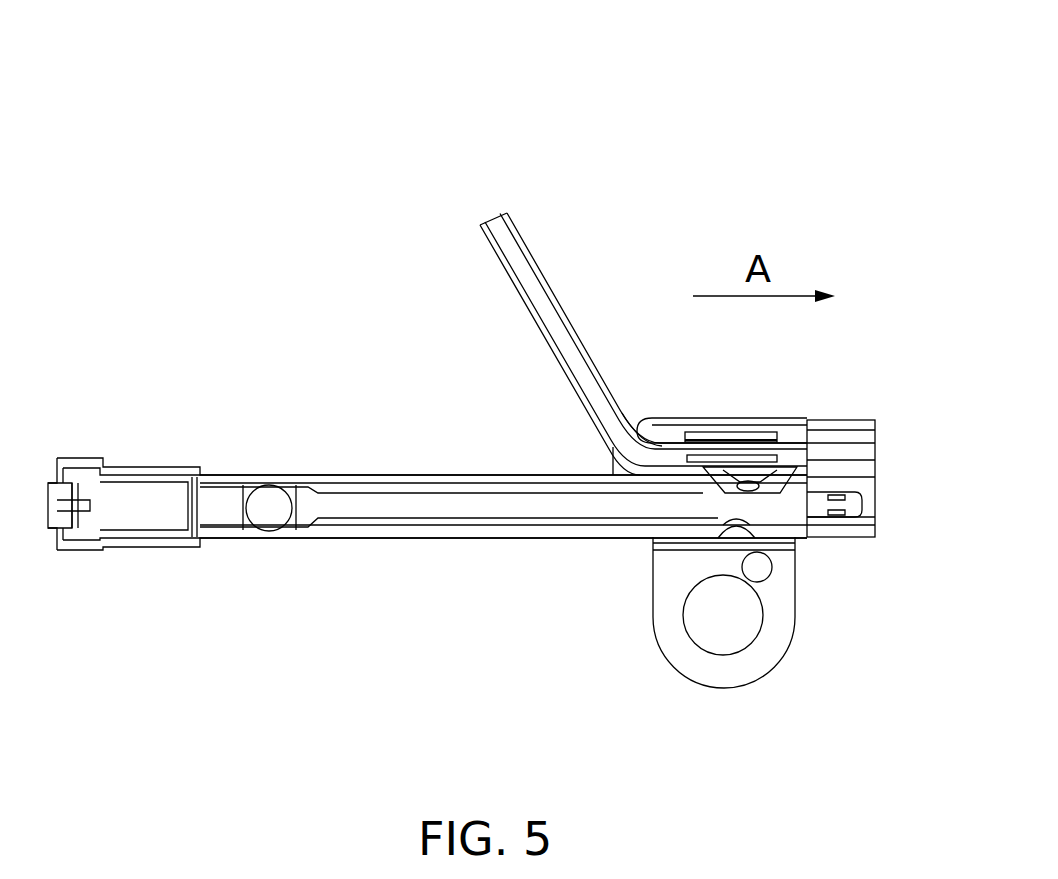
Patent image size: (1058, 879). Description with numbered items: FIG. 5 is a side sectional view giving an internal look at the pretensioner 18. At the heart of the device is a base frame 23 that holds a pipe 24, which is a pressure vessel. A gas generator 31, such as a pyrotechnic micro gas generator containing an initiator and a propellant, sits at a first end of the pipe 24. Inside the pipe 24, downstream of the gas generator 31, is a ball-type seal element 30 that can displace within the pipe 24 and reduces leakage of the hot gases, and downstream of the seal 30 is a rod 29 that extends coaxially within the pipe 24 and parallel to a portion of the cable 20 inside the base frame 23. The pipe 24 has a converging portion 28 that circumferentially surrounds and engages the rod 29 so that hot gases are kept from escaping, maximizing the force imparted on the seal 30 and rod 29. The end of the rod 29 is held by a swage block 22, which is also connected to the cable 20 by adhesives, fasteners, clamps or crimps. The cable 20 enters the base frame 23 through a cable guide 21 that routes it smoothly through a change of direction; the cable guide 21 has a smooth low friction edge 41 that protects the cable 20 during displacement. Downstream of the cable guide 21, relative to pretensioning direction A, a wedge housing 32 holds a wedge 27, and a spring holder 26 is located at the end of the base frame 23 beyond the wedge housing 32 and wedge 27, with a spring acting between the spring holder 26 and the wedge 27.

The pretensioner 18 is at (182, 129).
The cable 20 is at (497, 216).
The cable guide 21 is at (612, 468).
The swage block 22 is at (876, 500).
The base frame 23 is at (777, 662).
The pipe 24 is at (423, 538).
The spring holder 26 is at (797, 432).
The wedge 27 is at (732, 433).
The converging portion 28 is at (752, 525).
The rod 29 is at (350, 500).
The seal element 30 is at (252, 500).
The gas generator 31 is at (82, 483).
The wedge housing 32 is at (705, 432).
The low friction edge 41 is at (634, 430).